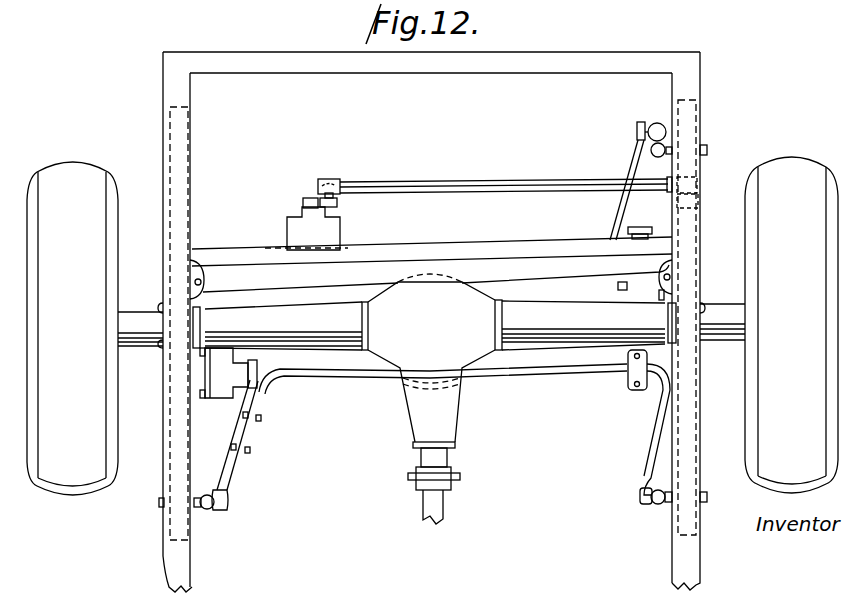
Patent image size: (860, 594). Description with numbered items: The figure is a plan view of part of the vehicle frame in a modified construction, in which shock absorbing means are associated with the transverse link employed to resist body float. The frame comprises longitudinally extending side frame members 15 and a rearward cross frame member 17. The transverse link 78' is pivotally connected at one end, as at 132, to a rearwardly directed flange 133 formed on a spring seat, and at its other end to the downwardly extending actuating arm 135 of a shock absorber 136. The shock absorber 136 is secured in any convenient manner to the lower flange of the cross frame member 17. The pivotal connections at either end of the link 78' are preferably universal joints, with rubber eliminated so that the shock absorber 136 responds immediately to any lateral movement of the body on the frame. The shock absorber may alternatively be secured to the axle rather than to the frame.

The side frame member 15 is at (167, 560).
The rearward cross frame member 17 is at (468, 248).
The transverse link 78' is at (495, 171).
The pivotal connection 132 is at (702, 174).
The rearwardly directed flange 133 is at (702, 218).
The actuating arm 135 is at (337, 205).
The shock absorber 136 is at (287, 231).